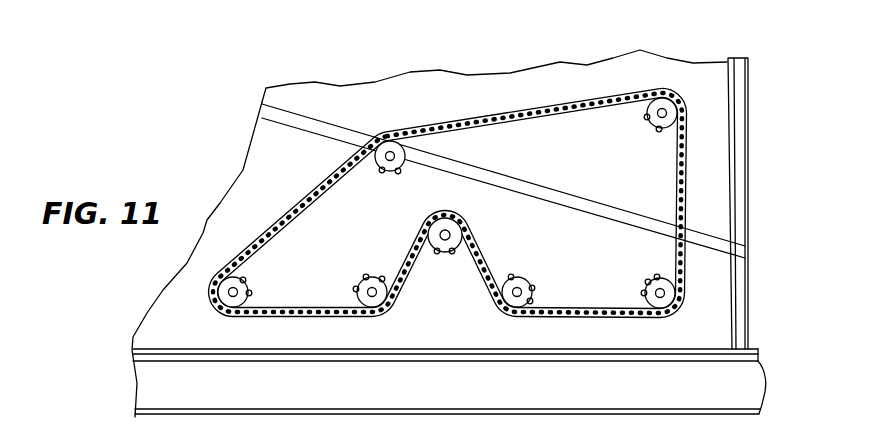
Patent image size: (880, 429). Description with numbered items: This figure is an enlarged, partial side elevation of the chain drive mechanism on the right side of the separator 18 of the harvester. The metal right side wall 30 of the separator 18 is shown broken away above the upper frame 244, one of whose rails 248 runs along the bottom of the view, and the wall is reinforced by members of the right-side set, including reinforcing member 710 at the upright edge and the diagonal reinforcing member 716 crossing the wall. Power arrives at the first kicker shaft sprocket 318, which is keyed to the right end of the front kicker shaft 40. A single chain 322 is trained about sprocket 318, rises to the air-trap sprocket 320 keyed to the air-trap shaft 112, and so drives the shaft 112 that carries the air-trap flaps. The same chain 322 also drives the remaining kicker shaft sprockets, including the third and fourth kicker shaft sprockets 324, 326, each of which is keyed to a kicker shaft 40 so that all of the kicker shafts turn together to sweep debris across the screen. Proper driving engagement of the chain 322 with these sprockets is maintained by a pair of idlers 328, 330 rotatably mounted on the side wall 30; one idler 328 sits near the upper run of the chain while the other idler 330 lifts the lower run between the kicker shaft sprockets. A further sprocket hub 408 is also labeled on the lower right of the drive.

The separator 18 is at (422, 233).
The right side wall 30 is at (207, 220).
The kicker shaft 40 is at (236, 291).
The air-trap shaft 112 is at (658, 110).
The upper frame 244 is at (405, 375).
The rail 248 is at (138, 375).
The first kicker shaft sprocket 318 is at (645, 293).
The air-trap sprocket 320 is at (655, 123).
The chain 322 is at (540, 107).
The third kicker shaft sprocket 324 is at (360, 289).
The fourth kicker shaft sprocket 326 is at (230, 306).
The idler 328 is at (390, 154).
The idler 330 is at (457, 228).
The sprocket shaft 408 is at (656, 292).
The reinforcing member 710 is at (734, 141).
The reinforcing member 716 is at (338, 136).